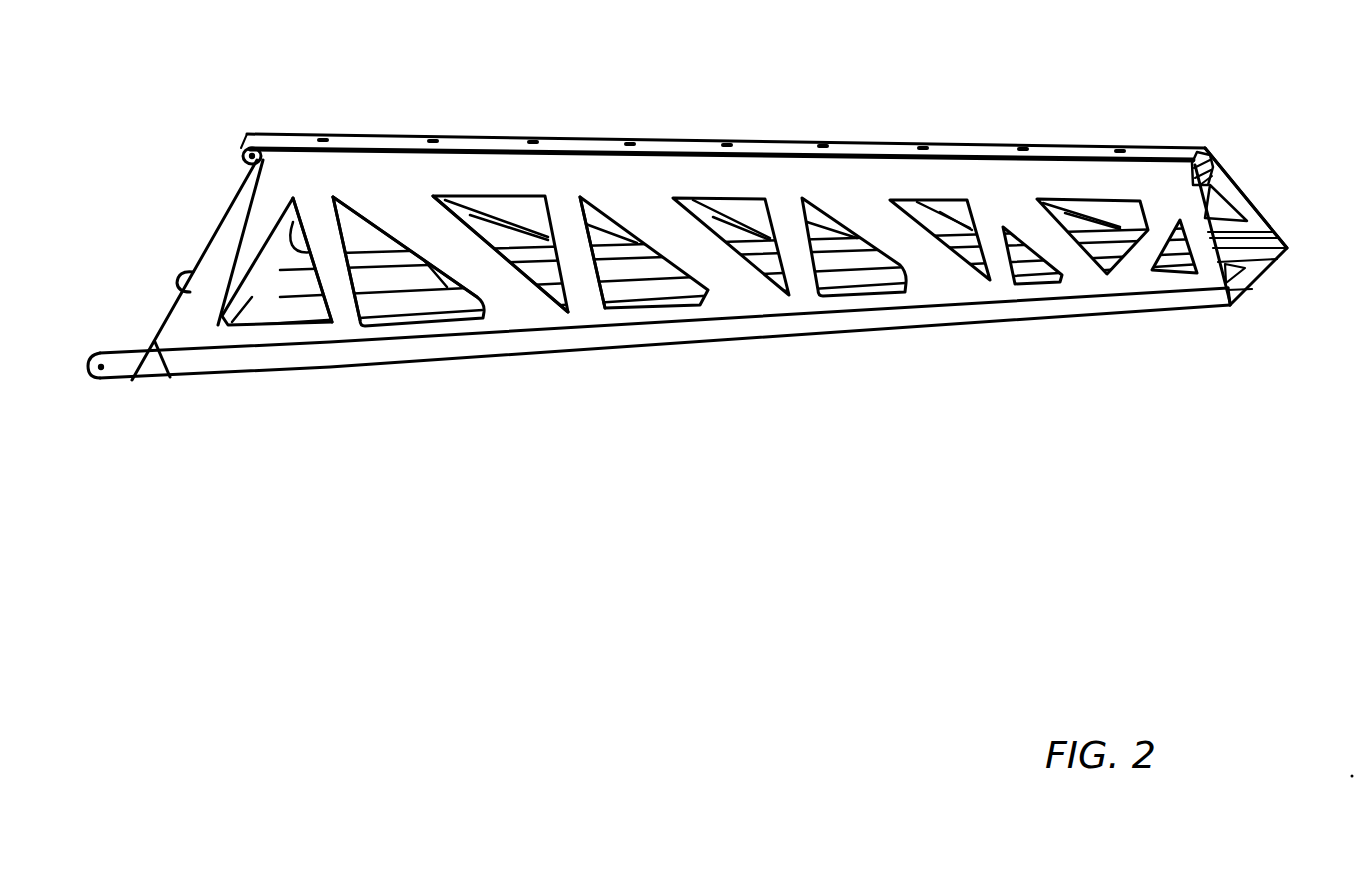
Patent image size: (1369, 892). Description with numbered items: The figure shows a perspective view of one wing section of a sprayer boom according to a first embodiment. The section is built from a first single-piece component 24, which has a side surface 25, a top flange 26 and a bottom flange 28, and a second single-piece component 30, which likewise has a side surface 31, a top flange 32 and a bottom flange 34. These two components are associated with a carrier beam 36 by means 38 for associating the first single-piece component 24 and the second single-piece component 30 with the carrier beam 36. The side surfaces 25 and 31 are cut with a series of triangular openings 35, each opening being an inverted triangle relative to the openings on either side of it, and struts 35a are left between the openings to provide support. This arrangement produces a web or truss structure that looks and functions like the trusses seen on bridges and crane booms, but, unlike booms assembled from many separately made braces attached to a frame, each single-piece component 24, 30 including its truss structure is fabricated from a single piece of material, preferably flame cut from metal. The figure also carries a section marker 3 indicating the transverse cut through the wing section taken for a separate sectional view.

The section line 3- 3 is at (1171, 350).
The first single-piece component 24 is at (320, 181).
The side surface 25 is at (193, 323).
The top flange 26 is at (262, 148).
The bottom flange 28 is at (1240, 292).
The second single-piece component 30 is at (1260, 212).
The side surface 31 is at (1235, 194).
The top flange 32 is at (1170, 150).
The bottom flange 34 is at (1263, 259).
The triangular openings 35 is at (355, 223).
The struts 35a is at (580, 283).
The carrier beam 36 is at (1218, 158).
The means for associating 38 is at (823, 143).